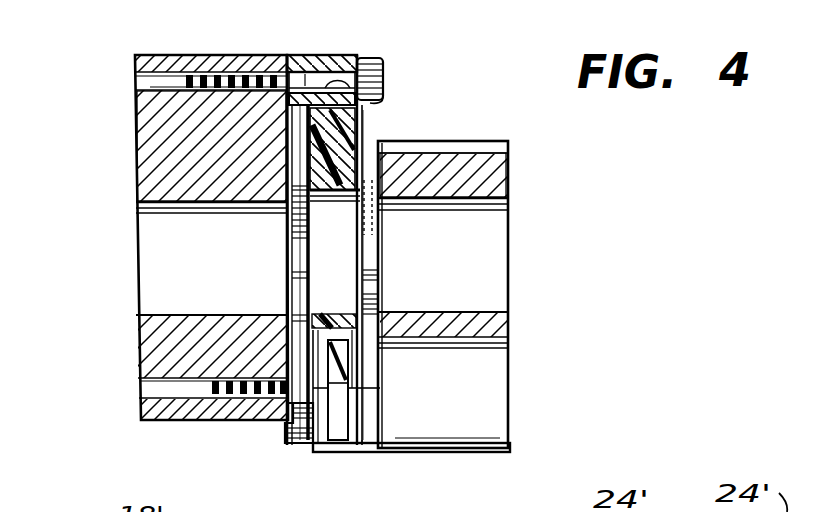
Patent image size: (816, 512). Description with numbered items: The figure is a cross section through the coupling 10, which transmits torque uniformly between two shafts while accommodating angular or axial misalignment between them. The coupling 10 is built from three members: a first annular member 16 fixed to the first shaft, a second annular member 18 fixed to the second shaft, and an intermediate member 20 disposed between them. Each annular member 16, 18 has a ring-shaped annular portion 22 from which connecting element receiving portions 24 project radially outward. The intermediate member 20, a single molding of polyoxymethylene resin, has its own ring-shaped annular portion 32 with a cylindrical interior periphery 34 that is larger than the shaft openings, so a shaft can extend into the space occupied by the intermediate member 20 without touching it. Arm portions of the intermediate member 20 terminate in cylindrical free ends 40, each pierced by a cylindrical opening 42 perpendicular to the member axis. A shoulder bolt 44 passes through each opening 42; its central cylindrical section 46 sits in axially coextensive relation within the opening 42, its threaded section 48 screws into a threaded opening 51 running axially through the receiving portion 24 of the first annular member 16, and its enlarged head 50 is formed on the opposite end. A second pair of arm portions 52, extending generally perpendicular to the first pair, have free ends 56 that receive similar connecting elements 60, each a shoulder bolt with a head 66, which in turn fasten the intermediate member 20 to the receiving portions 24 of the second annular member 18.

The coupling 10 is at (427, 80).
The first annular member 16 is at (134, 148).
The second annular member 18 is at (512, 349).
The intermediate member 20 is at (330, 457).
The ring-shaped annular portion 22 is at (160, 178).
The connecting element receiving portion 24 is at (481, 452).
The ring-shaped annular portion 32 is at (360, 139).
The cylindrical interior periphery 34 is at (300, 302).
The free end 40 is at (337, 53).
The cylindrical opening 42 is at (381, 101).
The shoulder bolt 44 is at (392, 60).
The central cylindrical section 46 is at (303, 54).
The threaded section 48 is at (272, 55).
The enlarged head 50 is at (380, 298).
The threaded opening 51 is at (155, 79).
The second arm portion 52 is at (350, 400).
The free end 56 is at (381, 212).
The connecting element 60 is at (288, 239).
The head 66 is at (288, 218).